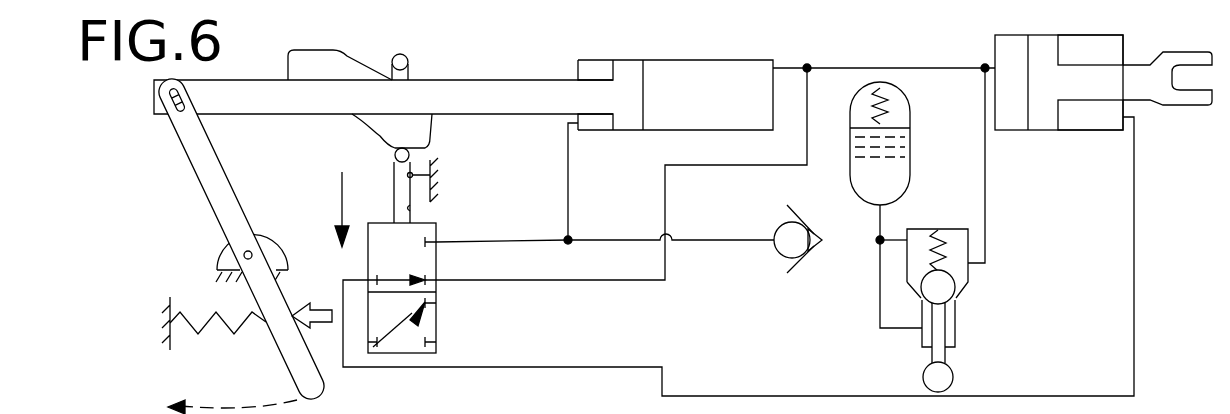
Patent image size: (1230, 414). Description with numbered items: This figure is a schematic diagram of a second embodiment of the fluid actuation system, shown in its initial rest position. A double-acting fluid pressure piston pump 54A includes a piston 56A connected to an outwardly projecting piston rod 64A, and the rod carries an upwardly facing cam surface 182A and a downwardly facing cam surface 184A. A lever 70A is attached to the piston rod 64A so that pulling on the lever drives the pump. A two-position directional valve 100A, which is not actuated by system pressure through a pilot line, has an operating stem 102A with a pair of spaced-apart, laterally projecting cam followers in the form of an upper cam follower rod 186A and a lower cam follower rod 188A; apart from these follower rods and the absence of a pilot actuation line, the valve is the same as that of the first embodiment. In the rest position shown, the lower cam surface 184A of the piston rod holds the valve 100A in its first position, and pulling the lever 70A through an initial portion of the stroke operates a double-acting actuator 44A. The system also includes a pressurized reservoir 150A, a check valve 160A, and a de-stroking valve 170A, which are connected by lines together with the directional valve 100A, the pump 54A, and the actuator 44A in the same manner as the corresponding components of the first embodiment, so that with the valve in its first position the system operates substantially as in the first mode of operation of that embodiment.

The double-acting actuator 44A is at (993, 33).
The double-acting fluid pressure piston pump 54A is at (776, 58).
The piston 56A is at (628, 80).
The piston rod 64A is at (532, 97).
The lever 70A is at (205, 172).
The two-position directional valve 100A is at (441, 321).
The operating stem 102A is at (393, 178).
The pressurized reservoir 150A is at (942, 80).
The check valve 160A is at (825, 180).
The de-stroking valve 170A is at (959, 320).
The upwardly facing cam surface 182A is at (346, 54).
The downwardly facing cam surface 184A is at (377, 130).
The upper cam follower rod 186A is at (405, 54).
The lower cam follower rod 188A is at (416, 153).